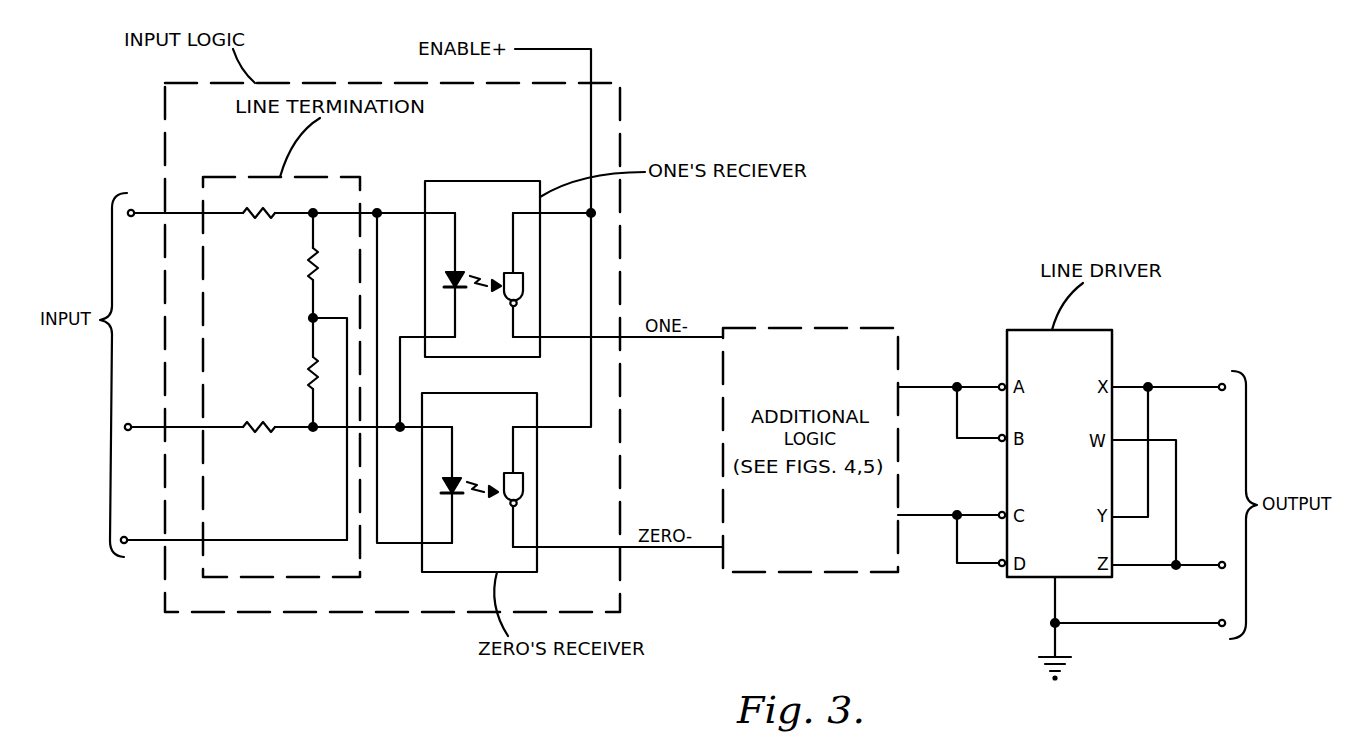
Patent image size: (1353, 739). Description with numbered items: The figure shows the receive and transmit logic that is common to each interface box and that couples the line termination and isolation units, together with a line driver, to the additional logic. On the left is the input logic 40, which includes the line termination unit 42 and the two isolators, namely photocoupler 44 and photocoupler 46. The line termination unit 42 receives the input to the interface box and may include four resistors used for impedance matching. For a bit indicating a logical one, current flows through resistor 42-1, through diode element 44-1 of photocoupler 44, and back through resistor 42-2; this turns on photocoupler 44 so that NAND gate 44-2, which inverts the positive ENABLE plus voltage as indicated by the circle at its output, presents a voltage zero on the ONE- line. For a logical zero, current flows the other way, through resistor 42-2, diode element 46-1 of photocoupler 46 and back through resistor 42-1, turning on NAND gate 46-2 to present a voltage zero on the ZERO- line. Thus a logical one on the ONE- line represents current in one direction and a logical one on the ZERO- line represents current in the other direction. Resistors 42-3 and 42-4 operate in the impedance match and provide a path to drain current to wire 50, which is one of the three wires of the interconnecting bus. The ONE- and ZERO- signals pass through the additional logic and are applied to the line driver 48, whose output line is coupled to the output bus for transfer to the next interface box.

The input logic 40 is at (324, 83).
The line termination unit 42 is at (335, 177).
The resistor 42-1 is at (262, 199).
The resistor 42-2 is at (259, 440).
The resistor 42-3 is at (285, 264).
The resistor 42-4 is at (285, 373).
The photocoupler 44 is at (473, 181).
The diode element 44-1 is at (463, 284).
The NAND gate 44-2 is at (505, 278).
The photocoupler 46 is at (478, 393).
The diode element 46-1 is at (461, 489).
The NAND gate 46-2 is at (503, 478).
The line driver 48 is at (1090, 330).
The wire 50 is at (228, 540).